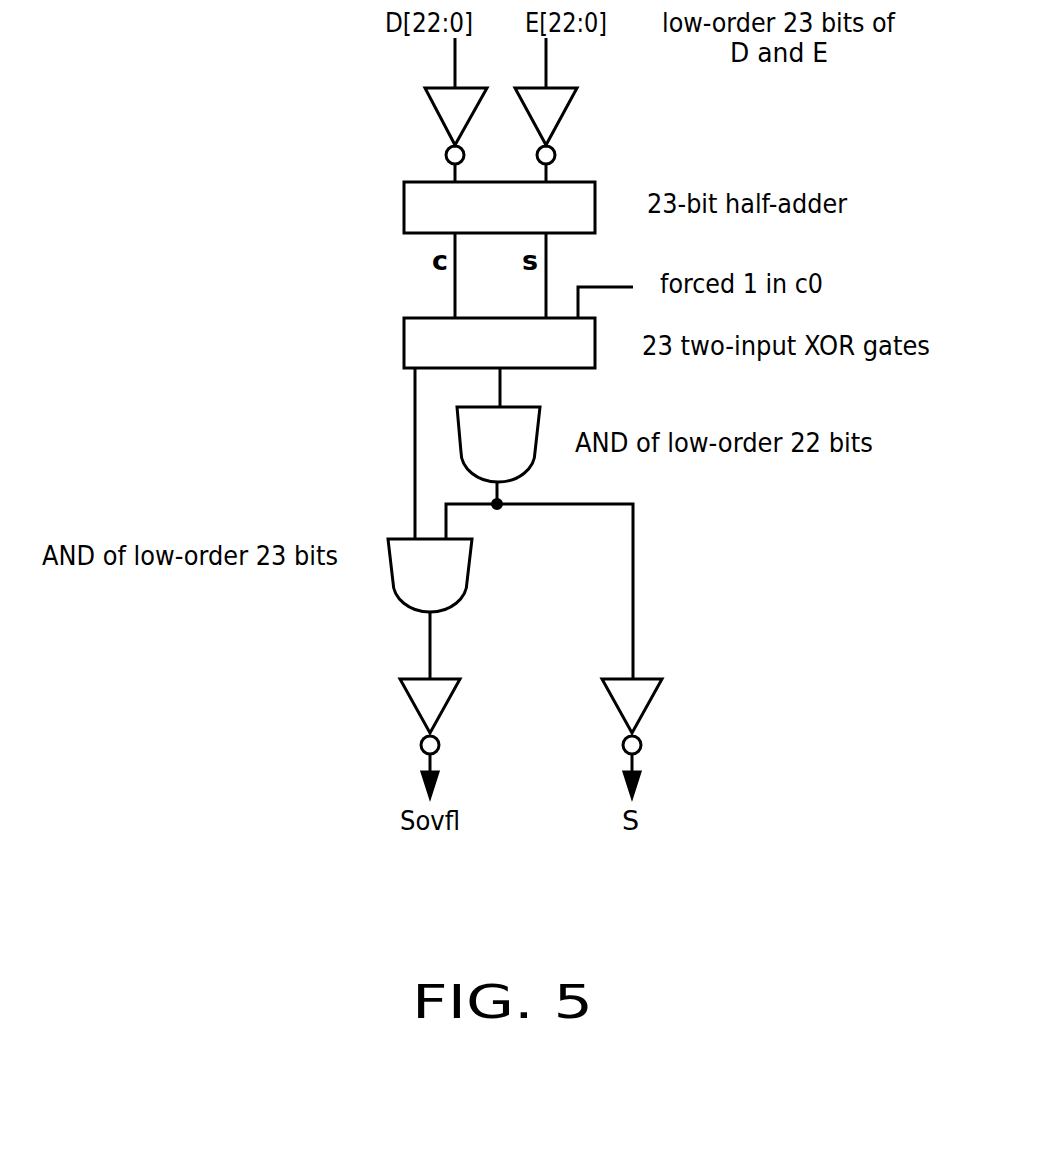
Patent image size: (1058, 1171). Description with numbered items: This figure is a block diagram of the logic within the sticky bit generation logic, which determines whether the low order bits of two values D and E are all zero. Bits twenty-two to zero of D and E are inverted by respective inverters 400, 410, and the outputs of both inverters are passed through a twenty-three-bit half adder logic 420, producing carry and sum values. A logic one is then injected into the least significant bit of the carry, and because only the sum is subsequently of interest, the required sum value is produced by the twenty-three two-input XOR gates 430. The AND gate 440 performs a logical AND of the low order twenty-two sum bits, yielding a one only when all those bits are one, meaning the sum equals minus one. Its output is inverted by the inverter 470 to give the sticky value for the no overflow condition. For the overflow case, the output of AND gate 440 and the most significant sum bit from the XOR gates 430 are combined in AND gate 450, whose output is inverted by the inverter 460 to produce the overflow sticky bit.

The inverter 400 is at (440, 117).
The inverter 410 is at (563, 122).
The 23-bit half adder logic 420 is at (403, 202).
The 23 two-input XOR gates 430 is at (403, 343).
The AND gate 440 is at (540, 423).
The AND gate 450 is at (470, 578).
The inverter 460 is at (448, 705).
The inverter 470 is at (648, 707).